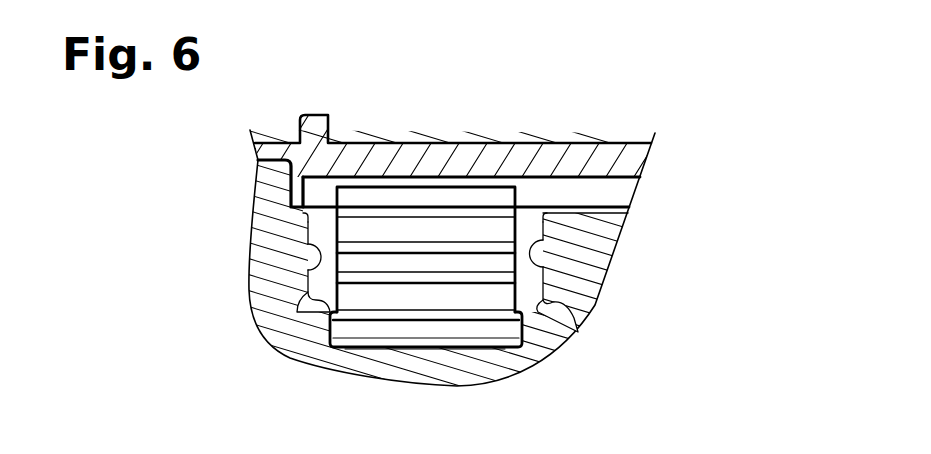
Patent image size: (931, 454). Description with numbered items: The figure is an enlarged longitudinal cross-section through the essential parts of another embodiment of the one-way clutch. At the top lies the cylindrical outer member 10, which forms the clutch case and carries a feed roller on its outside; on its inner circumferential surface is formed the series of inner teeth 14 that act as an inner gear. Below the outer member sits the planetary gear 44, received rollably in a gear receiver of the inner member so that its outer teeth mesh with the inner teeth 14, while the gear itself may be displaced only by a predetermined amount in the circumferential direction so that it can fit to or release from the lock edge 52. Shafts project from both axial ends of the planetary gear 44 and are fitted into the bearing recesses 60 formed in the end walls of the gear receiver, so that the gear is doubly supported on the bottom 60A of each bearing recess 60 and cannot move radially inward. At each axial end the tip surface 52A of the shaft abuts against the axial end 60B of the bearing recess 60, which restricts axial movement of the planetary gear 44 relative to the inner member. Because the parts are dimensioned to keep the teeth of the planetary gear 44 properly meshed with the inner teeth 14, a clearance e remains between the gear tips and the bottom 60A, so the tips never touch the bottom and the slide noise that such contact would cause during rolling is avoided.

The outer member 10 is at (612, 152).
The inner teeth 14 is at (623, 193).
The planetary gear 44 is at (418, 184).
The lock edge 52 is at (318, 290).
The tip surface of shaft 52A is at (257, 212).
The bearing recess 60 is at (322, 210).
The bottom of bearing recess 60A is at (300, 304).
The axial end of bearing recess 60B is at (310, 218).
The clearance e is at (425, 348).